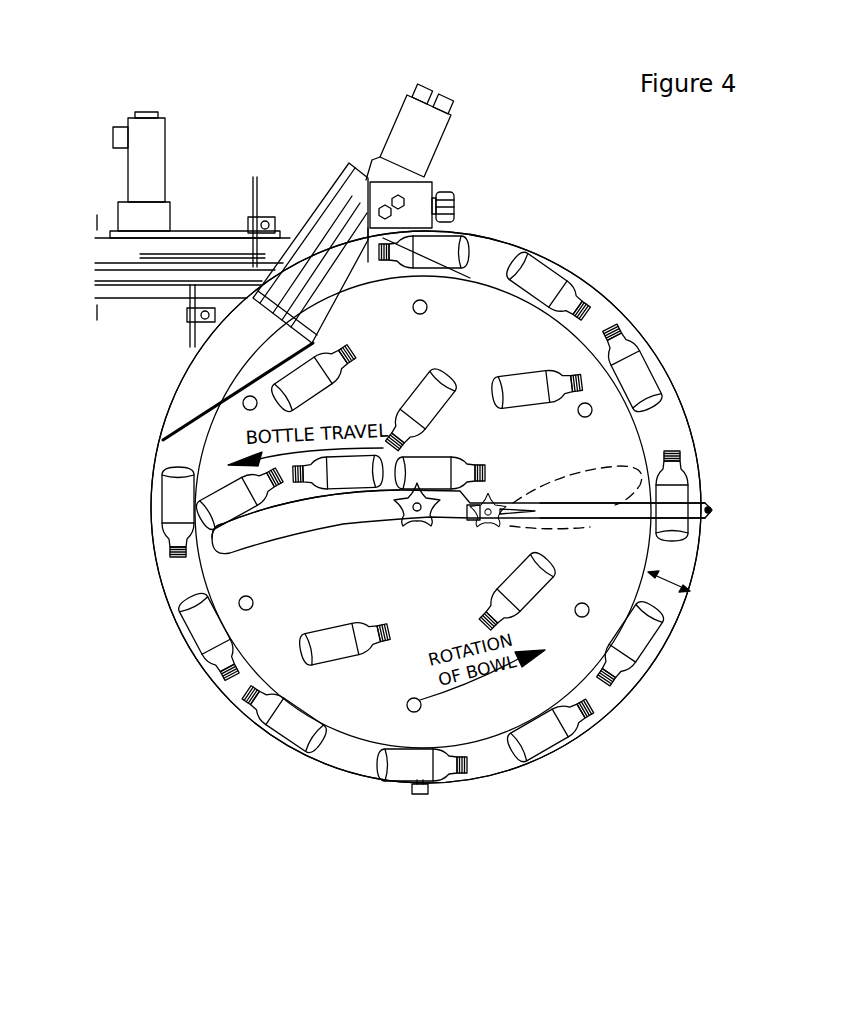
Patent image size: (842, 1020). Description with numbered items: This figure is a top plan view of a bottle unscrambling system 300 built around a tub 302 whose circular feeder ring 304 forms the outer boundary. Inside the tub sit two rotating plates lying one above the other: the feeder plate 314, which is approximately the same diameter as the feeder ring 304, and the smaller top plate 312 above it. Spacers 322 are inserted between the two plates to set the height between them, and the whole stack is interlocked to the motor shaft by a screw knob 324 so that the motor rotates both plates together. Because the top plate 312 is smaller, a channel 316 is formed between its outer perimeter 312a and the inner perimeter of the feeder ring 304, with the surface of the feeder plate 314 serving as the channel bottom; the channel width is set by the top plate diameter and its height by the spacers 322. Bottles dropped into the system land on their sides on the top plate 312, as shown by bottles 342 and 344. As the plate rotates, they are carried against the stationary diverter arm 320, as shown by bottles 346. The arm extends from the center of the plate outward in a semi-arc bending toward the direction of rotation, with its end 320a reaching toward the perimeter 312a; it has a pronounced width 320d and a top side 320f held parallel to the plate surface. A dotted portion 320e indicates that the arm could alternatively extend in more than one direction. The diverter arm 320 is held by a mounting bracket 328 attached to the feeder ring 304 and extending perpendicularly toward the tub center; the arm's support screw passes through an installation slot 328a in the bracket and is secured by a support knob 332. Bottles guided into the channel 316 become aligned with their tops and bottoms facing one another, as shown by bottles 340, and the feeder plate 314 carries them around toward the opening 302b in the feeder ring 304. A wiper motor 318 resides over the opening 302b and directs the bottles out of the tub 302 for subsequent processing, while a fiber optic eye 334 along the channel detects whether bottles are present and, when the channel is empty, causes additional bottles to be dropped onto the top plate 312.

The bottle unscrambling system 300 is at (808, 310).
The tub 302 is at (702, 460).
The opening 302b is at (196, 227).
The feeder ring 304 is at (692, 436).
The top plate 312 is at (473, 728).
The outer perimeter 312a is at (348, 722).
The feeder plate 314 is at (343, 758).
The channel 316 is at (688, 588).
The wiper motor 318 is at (345, 163).
The diverter arm 320 is at (222, 527).
The end of diverter arm 320a is at (214, 548).
The width of diverter arm 320d is at (348, 517).
The dotted portion of diverter arm 320e is at (603, 478).
The top side of diverter arm 320f is at (315, 519).
The spacers 322 is at (425, 312).
The screw knob 324 is at (403, 528).
The mounting bracket 328 is at (622, 514).
The installation slot 328a is at (512, 501).
The support knob 332 is at (479, 528).
The fiber optic eye 334 is at (420, 795).
The bottles 340 is at (632, 352).
The bottles 342 is at (485, 610).
The bottles 344 is at (413, 410).
The bottles 346 is at (317, 473).